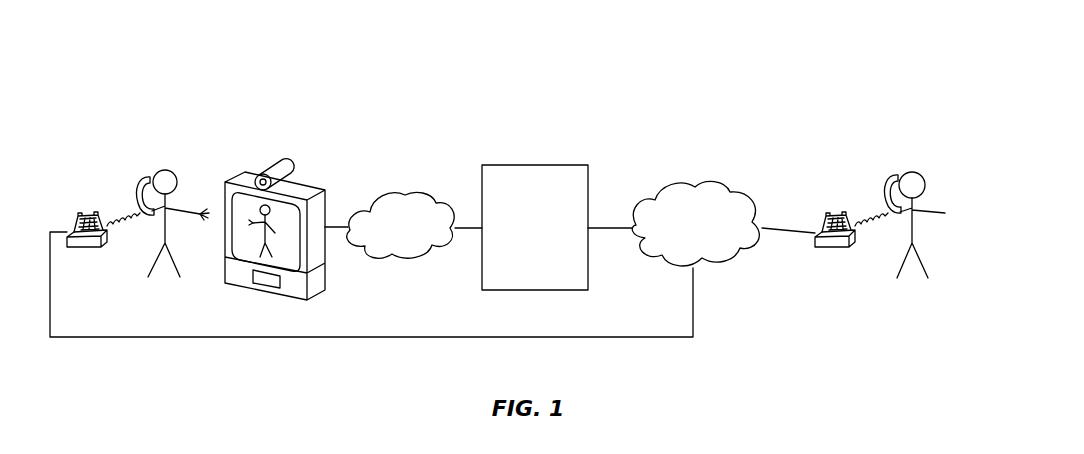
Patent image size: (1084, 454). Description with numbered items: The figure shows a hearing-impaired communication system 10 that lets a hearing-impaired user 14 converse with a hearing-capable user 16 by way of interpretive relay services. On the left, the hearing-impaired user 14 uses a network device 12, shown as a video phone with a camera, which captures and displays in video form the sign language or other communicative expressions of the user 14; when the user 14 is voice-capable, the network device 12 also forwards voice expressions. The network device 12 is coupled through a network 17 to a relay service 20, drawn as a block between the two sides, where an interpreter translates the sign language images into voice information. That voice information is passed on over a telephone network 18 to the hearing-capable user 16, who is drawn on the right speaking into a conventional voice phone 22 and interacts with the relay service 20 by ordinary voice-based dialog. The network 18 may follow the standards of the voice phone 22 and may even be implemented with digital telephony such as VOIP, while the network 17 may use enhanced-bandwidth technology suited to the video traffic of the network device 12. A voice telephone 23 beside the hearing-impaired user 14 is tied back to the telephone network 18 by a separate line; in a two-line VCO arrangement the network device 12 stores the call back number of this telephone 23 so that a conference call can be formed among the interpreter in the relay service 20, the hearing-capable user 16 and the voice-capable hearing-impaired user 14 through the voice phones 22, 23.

The hearing-impaired communication system 10 is at (645, 89).
The network device 12 is at (289, 157).
The hearing-impaired user 14 is at (174, 172).
The hearing-capable user 16 is at (923, 173).
The network 17 is at (396, 187).
The network 18 is at (708, 183).
The relay service 20 is at (546, 165).
The voice phone 22 is at (837, 207).
The voice telephone 23 is at (88, 206).